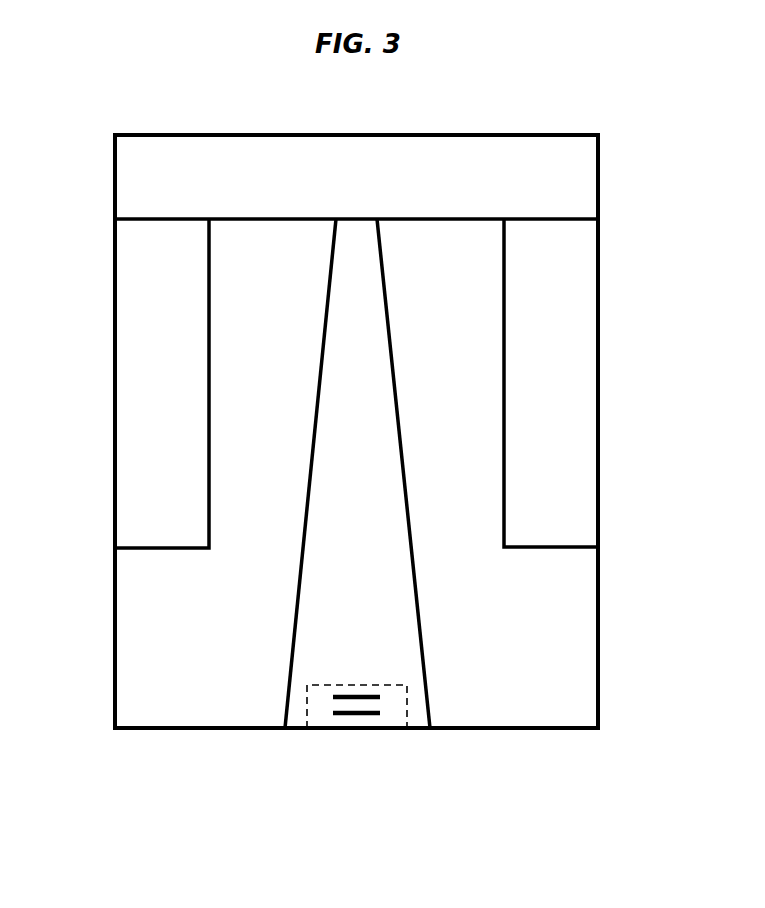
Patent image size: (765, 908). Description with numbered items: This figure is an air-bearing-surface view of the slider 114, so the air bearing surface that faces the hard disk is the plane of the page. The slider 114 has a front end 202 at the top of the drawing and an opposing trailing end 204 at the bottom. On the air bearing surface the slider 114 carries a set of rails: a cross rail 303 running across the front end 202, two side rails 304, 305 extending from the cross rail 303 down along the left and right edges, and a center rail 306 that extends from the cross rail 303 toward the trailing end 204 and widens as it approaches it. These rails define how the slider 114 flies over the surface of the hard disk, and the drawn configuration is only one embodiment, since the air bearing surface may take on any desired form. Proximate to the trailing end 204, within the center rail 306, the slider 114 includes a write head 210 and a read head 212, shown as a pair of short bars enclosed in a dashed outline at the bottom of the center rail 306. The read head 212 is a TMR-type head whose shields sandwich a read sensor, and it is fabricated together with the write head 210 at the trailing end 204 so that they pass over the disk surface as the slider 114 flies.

The slider 114 is at (540, 82).
The front end 202 is at (250, 123).
The cross rail 303 is at (158, 142).
The trailing end 204 is at (526, 745).
The side rail 304 is at (123, 287).
The side rail 305 is at (583, 292).
The center rail 306 is at (380, 397).
The write head 210 is at (347, 693).
The read head 212 is at (351, 716).